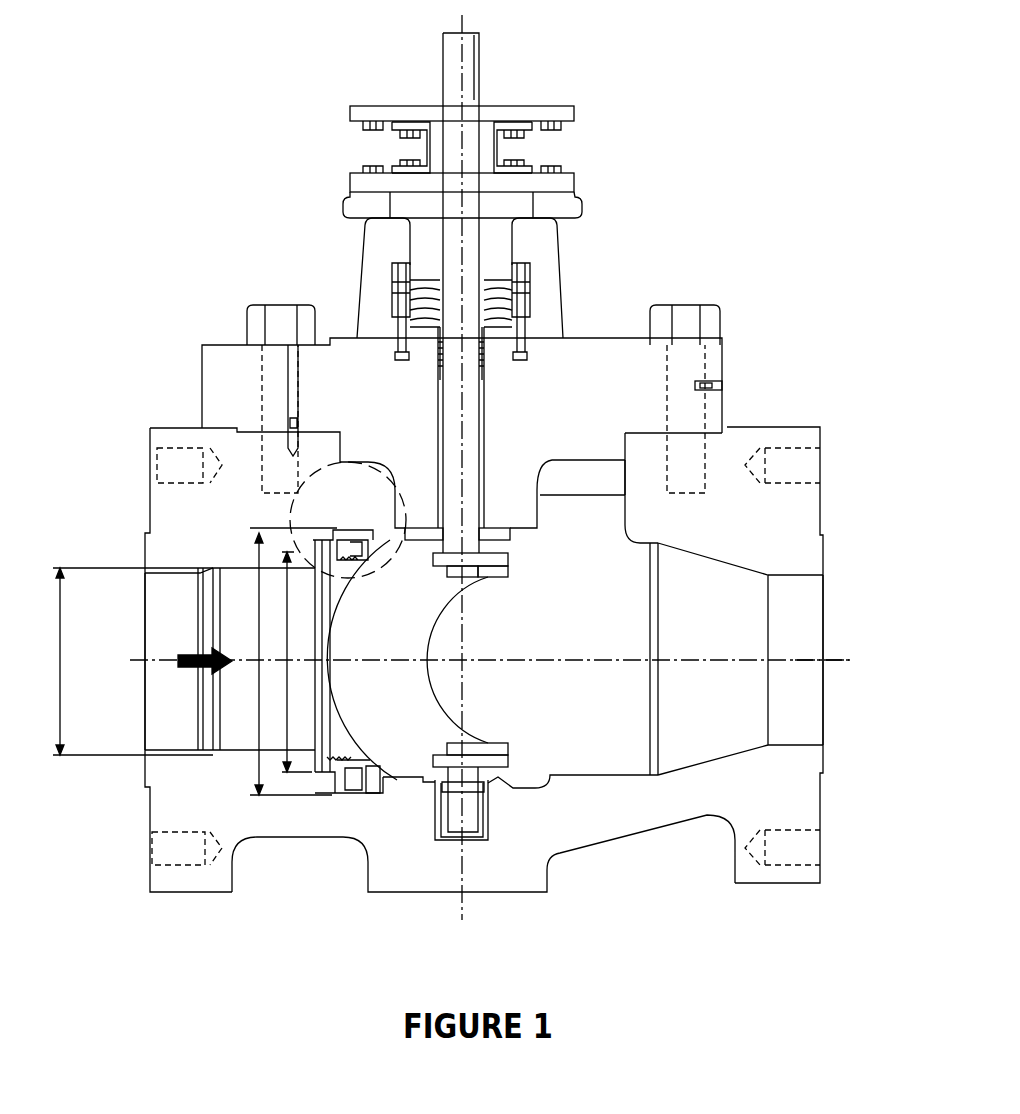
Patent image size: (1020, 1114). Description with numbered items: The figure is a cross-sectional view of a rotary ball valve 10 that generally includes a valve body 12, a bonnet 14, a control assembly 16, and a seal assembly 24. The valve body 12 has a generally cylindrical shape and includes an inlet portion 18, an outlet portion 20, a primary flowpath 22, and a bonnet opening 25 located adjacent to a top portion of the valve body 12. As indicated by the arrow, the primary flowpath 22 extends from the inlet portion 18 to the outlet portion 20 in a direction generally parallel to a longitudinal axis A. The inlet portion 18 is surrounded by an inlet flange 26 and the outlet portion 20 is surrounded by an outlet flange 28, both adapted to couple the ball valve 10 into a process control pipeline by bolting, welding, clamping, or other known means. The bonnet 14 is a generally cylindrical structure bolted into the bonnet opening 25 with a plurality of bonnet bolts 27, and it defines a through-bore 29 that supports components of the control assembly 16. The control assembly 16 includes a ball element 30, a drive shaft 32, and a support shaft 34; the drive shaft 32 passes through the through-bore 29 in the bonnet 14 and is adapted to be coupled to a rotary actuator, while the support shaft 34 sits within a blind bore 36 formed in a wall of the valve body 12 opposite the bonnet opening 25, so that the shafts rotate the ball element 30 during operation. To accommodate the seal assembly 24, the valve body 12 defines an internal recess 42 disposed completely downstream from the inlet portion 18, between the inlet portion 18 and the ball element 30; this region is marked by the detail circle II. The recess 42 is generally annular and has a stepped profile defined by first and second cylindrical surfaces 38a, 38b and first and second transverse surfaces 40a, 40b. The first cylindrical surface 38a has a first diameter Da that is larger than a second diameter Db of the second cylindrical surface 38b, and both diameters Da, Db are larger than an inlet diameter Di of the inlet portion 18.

The rotary ball valve 10 is at (606, 110).
The valve body 12 is at (167, 422).
The bonnet 14 is at (594, 330).
The control assembly 16 is at (470, 65).
The inlet portion 18 is at (158, 737).
The outlet portion 20 is at (803, 628).
The primary flowpath 22 is at (193, 653).
The seal assembly 24 is at (372, 760).
The bonnet opening 25 is at (622, 475).
The inlet flange 26 is at (200, 530).
The bonnet bolts 27 is at (277, 318).
The outlet flange 28 is at (808, 500).
The through-bore 29 is at (484, 402).
The ball element 30 is at (408, 577).
The drive shaft 32 is at (447, 135).
The support shaft 34 is at (468, 815).
The blind bore 36 is at (477, 838).
The first cylindrical surface 38a is at (357, 553).
The second cylindrical surface 38b is at (328, 565).
The first transverse surface 40a is at (333, 540).
The second transverse surface 40b is at (305, 555).
The internal recess 42 is at (340, 752).
The longitudinal axis A is at (793, 665).
The detail region II is at (357, 480).
The inlet diameter Di is at (133, 661).
The first diameter Da is at (288, 664).
The second diameter Db is at (293, 662).